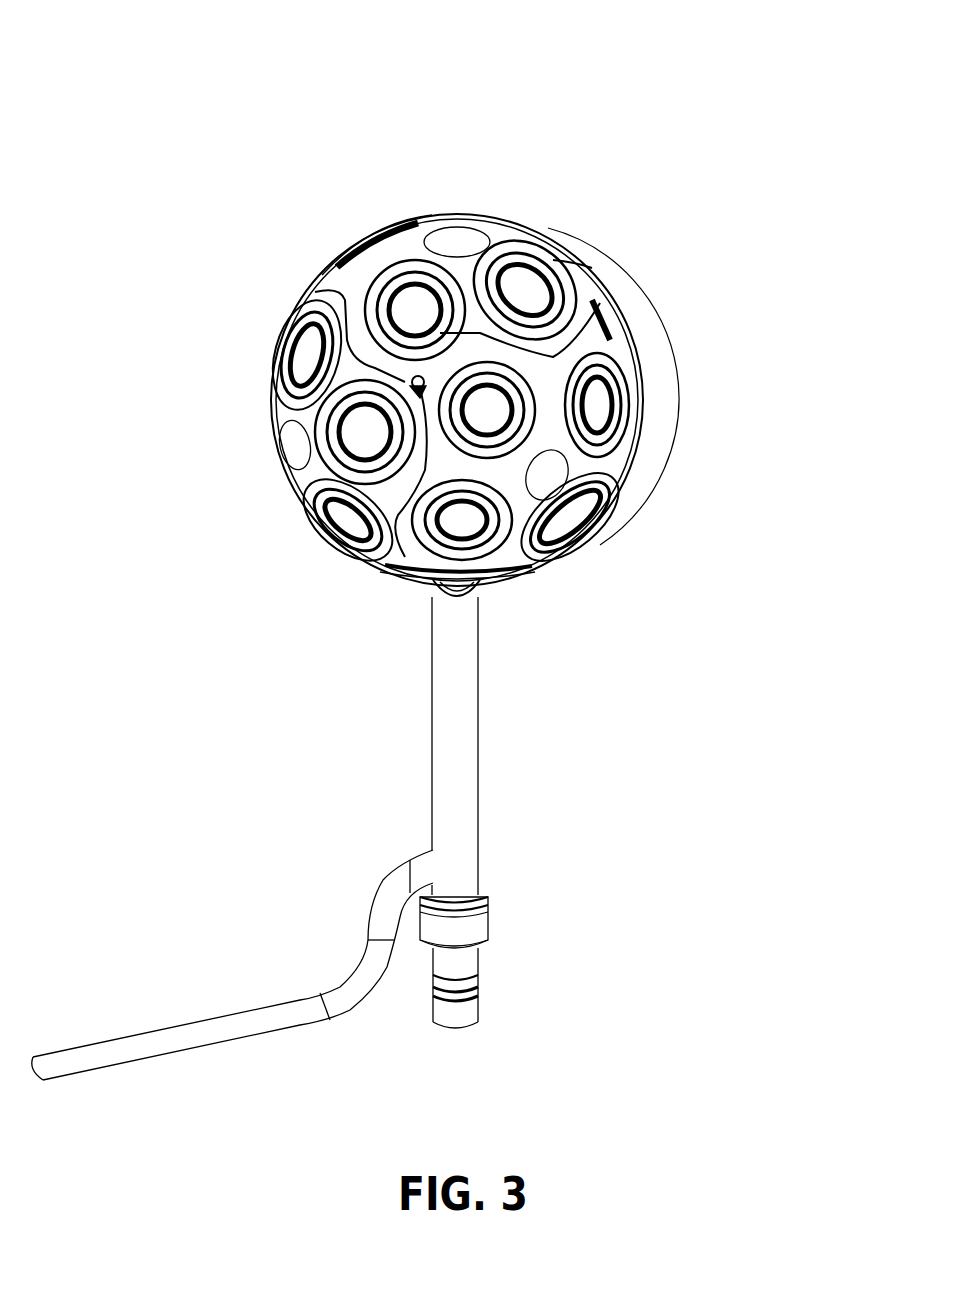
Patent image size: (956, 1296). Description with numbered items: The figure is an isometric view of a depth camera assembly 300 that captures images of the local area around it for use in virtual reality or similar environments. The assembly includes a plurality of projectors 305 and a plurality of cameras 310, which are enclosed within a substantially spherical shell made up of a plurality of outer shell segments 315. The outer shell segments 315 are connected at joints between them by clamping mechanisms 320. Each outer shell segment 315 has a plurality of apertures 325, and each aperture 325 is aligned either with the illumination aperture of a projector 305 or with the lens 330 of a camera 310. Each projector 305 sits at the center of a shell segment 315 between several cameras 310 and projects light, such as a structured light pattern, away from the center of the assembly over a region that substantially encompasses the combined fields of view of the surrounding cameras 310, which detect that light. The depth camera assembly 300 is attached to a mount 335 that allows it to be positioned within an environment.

The depth camera assembly 300 is at (90, 38).
The projector 305 is at (303, 473).
The camera 310 is at (606, 392).
The outer shell segment 315 is at (592, 622).
The clamping mechanism 320 is at (421, 388).
The aperture 325 is at (322, 418).
The lens 330 is at (597, 418).
The mount 335 is at (455, 780).